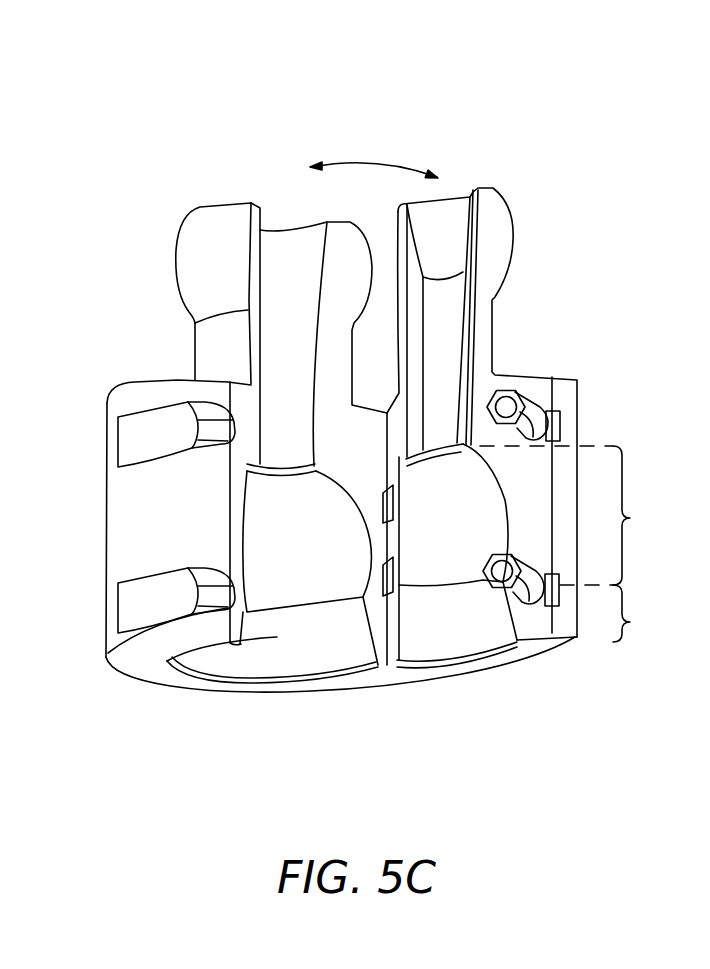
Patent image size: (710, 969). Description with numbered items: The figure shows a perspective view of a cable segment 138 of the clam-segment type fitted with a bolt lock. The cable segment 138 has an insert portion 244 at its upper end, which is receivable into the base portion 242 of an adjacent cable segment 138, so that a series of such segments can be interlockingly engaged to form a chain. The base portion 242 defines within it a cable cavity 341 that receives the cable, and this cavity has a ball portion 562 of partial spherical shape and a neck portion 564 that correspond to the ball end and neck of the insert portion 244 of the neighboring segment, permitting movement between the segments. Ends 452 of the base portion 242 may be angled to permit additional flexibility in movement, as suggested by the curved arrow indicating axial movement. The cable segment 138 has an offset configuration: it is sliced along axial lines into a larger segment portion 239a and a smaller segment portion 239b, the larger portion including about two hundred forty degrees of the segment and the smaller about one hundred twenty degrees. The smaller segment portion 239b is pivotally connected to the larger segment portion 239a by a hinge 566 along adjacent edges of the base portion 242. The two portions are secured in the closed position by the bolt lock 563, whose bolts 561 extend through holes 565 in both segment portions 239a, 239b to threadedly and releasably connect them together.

The cable segment 138 is at (346, 116).
The larger segment portion 239a is at (223, 210).
The smaller segment portion 239b is at (488, 212).
The insert portion 244 is at (188, 247).
The ends of the base portion 452 is at (143, 383).
The base portion 242 is at (123, 543).
The cable cavity 341 is at (261, 583).
The hinge 566 is at (373, 610).
The bolt lock 563 is at (541, 385).
The holes 565 is at (547, 410).
The bolts 561 is at (540, 433).
The ball portion 562 is at (628, 518).
The neck portion 564 is at (628, 622).